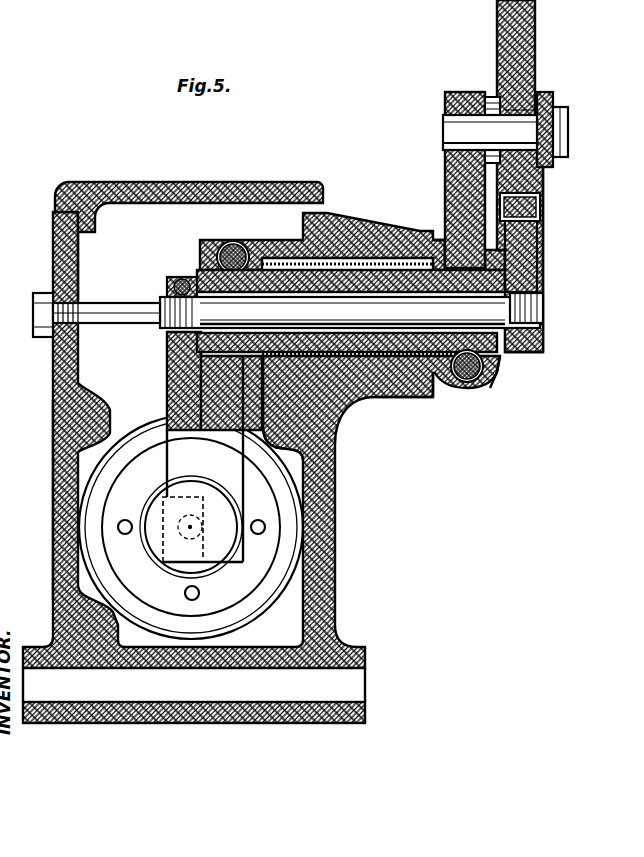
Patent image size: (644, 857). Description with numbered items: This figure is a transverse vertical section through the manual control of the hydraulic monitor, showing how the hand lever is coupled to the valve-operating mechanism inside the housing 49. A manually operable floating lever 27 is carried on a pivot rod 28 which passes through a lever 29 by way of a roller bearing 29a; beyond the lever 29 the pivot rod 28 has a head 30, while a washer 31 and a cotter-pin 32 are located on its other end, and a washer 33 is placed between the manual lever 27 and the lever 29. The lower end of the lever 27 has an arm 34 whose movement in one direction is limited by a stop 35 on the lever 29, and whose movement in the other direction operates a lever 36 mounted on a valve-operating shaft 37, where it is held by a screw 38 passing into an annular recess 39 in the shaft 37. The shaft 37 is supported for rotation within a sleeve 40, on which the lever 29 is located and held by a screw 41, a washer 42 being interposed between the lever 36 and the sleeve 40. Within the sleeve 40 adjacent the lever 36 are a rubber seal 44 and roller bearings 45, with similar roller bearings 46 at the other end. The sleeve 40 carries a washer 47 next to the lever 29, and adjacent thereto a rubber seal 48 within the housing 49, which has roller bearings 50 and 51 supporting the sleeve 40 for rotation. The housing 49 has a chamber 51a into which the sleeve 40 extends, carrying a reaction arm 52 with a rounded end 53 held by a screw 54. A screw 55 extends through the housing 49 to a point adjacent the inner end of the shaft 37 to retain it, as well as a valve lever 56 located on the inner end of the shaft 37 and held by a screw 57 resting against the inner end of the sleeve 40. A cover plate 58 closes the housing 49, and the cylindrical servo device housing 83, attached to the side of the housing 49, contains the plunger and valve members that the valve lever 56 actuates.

The manually operable floating lever 27 is at (525, 22).
The pivot rod 28 is at (570, 128).
The lever 29 is at (460, 92).
The roller bearing 29a is at (523, 110).
The head 30 is at (445, 133).
The washer 31 is at (548, 167).
The cotter-pin 32 is at (554, 157).
The washer 33 is at (493, 93).
The arm 34 is at (543, 205).
The stop 35 is at (542, 260).
The lever 36 is at (527, 235).
The valve-operating shaft 37 is at (350, 312).
The screw 38 is at (547, 337).
The annular recess 39 is at (544, 302).
The sleeve 40 is at (303, 355).
The screw 41 is at (478, 384).
The washer 42 is at (522, 353).
The rubber seal 44 is at (500, 368).
The roller bearings 45 is at (497, 368).
The roller bearings 46 is at (200, 275).
The washer 47 is at (438, 240).
The rubber seal 48 is at (420, 398).
The housing 49 is at (62, 508).
The roller bearings 50 is at (283, 262).
The roller bearings 51 is at (363, 263).
The chamber 51a is at (83, 253).
The reaction arm 52 is at (243, 408).
The rounded end 53 is at (208, 560).
The screw 54 is at (228, 256).
The screw 55 is at (103, 318).
The valve lever 56 is at (167, 367).
The screw 57 is at (165, 283).
The cover plate 58 is at (73, 190).
The cylindrical servo device housing 83 is at (292, 538).